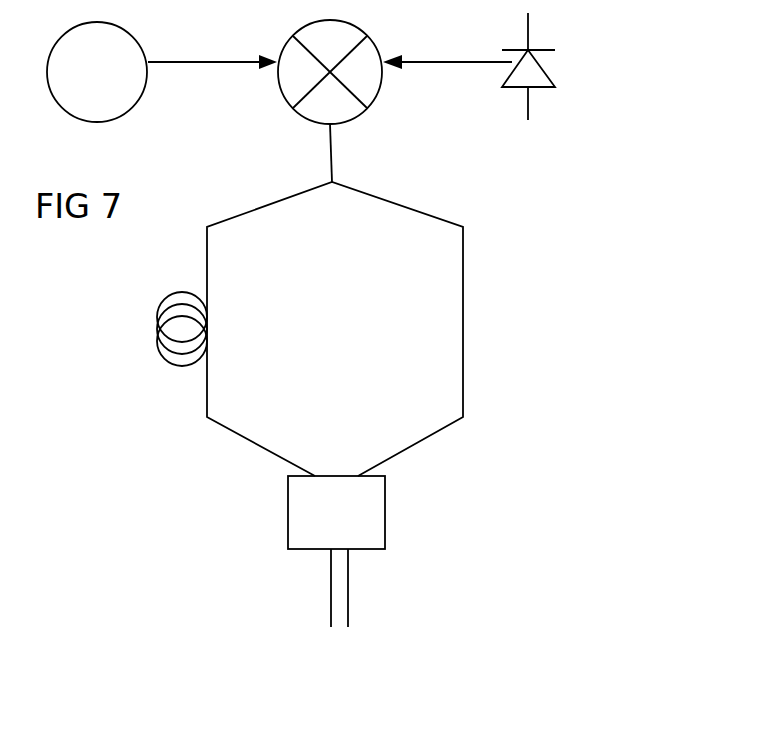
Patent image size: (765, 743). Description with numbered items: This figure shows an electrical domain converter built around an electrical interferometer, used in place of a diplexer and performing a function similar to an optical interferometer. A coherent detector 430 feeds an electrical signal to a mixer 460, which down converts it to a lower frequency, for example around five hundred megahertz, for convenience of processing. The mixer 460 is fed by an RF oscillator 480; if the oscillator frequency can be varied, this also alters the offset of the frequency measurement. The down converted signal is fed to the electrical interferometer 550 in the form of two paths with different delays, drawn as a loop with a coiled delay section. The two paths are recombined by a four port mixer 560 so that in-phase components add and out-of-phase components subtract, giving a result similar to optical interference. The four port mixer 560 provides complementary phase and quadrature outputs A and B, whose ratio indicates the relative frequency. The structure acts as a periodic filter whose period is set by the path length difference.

The RF oscillator 480 is at (97, 72).
The mixer 460 is at (330, 62).
The coherent detector 430 is at (567, 65).
The electrical interferometer 550 is at (335, 329).
The four port mixer 560 is at (407, 570).